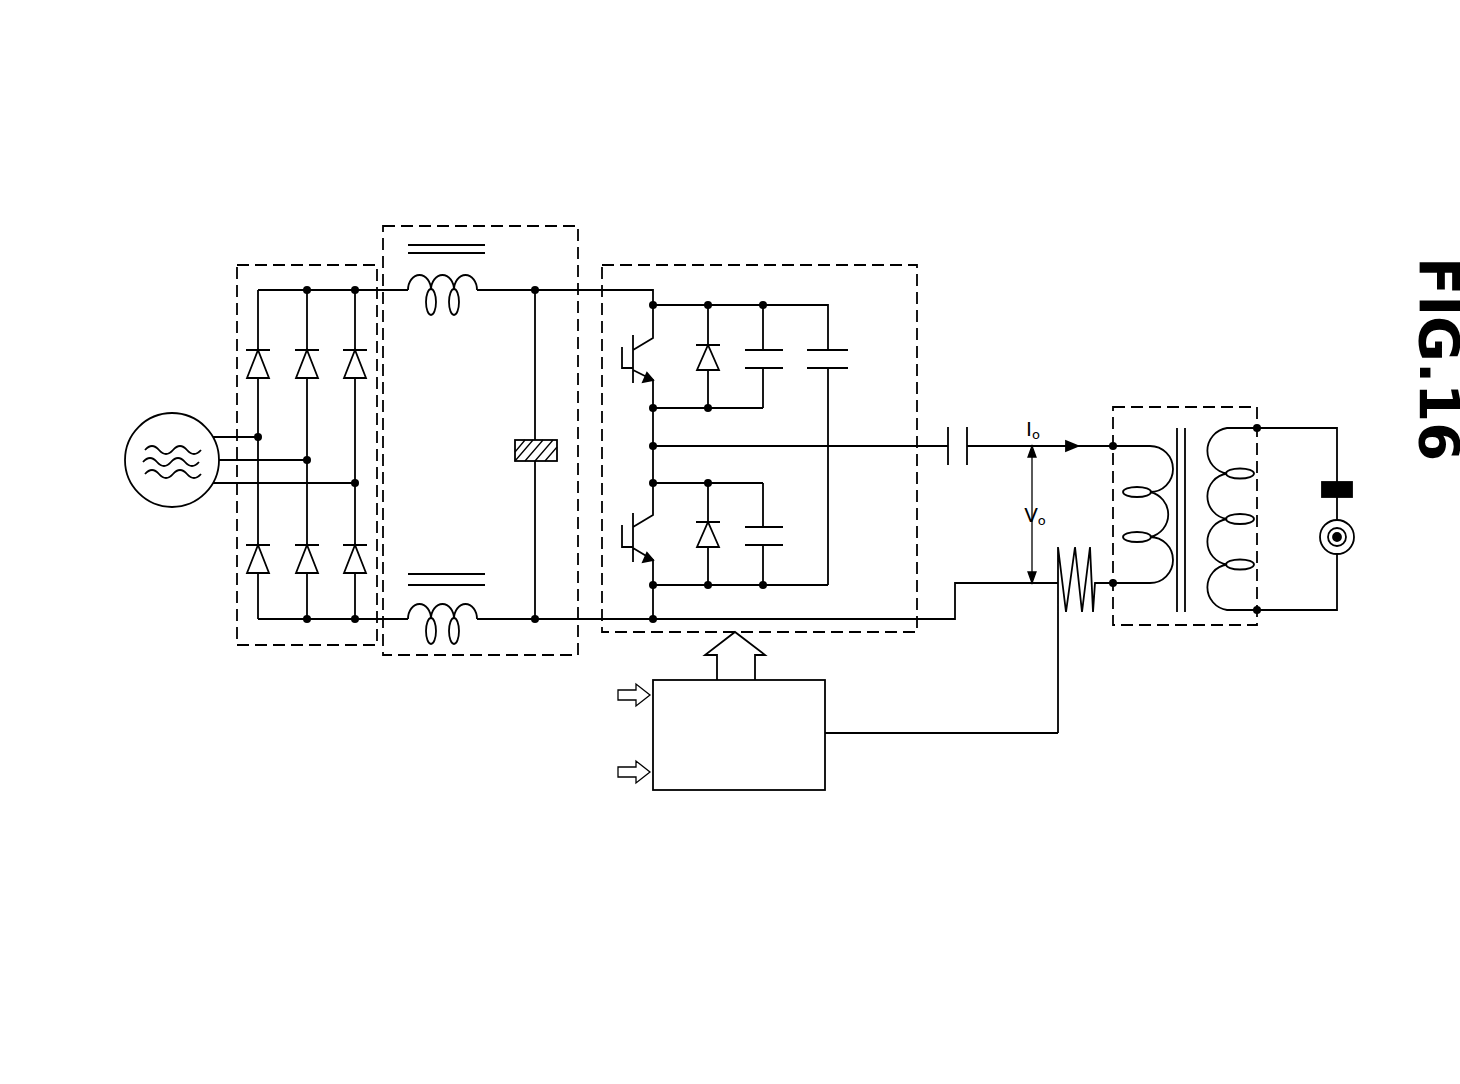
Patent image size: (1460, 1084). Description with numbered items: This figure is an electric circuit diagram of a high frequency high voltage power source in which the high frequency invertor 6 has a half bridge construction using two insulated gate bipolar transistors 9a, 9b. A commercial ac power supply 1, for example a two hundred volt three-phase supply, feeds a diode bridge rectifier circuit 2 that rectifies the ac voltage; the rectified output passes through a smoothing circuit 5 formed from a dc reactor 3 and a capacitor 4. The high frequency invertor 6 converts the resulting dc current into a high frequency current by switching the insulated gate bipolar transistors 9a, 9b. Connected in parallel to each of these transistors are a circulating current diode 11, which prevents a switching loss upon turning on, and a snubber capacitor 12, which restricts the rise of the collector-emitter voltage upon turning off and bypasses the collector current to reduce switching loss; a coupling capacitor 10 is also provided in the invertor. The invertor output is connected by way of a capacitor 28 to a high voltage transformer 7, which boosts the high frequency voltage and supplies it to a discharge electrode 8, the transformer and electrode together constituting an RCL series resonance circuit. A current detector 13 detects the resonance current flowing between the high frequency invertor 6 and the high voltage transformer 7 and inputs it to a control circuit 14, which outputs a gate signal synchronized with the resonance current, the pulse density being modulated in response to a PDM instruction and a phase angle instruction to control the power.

The commercial ac power supply 1 is at (172, 507).
The diode bridge rectifier circuit 2 is at (280, 265).
The dc reactor 3 is at (433, 315).
The capacitor 4 is at (528, 440).
The smoothing circuit 5 is at (480, 388).
The high frequency invertor 6 is at (796, 406).
The high voltage transformer 7 is at (1165, 407).
The discharge electrode 8 is at (1352, 495).
The insulated gate bipolar transistor 9a is at (651, 333).
The insulated gate bipolar transistor 9b is at (660, 555).
The coupling capacitor 10 is at (848, 372).
The circulating current diode 11 is at (706, 335).
The snubber capacitor 12 is at (770, 350).
The current detector 13 is at (1088, 600).
The control circuit 14 is at (723, 790).
The capacitor 28 is at (968, 436).